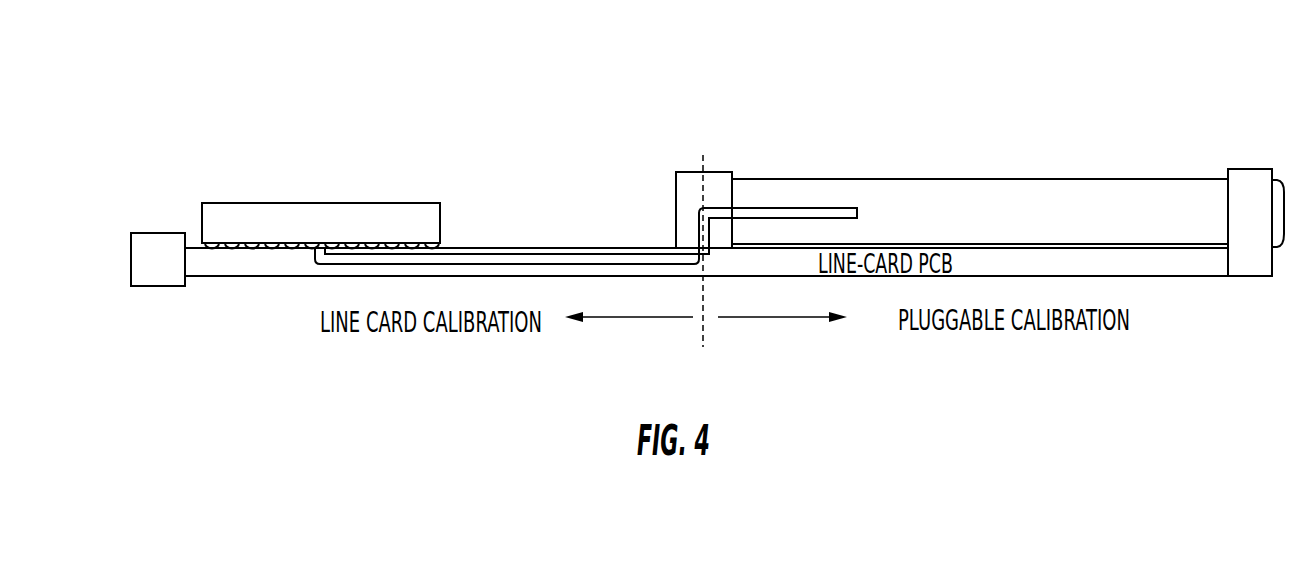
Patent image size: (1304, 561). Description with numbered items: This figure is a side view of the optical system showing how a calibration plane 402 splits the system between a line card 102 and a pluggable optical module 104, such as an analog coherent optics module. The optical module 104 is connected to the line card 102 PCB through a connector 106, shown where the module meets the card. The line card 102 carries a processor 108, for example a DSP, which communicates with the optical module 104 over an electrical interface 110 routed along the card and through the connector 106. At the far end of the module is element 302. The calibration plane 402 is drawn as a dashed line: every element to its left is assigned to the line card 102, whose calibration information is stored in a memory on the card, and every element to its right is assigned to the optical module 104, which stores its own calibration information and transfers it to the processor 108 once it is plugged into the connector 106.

The line card 102 is at (232, 278).
The pluggable optical module 104 is at (1050, 178).
The connector 106 is at (692, 172).
The processor 108 is at (320, 203).
The electrical interface 110 is at (585, 252).
The optical connector end of pluggable 302 is at (1248, 168).
The calibration plane 402 is at (705, 338).